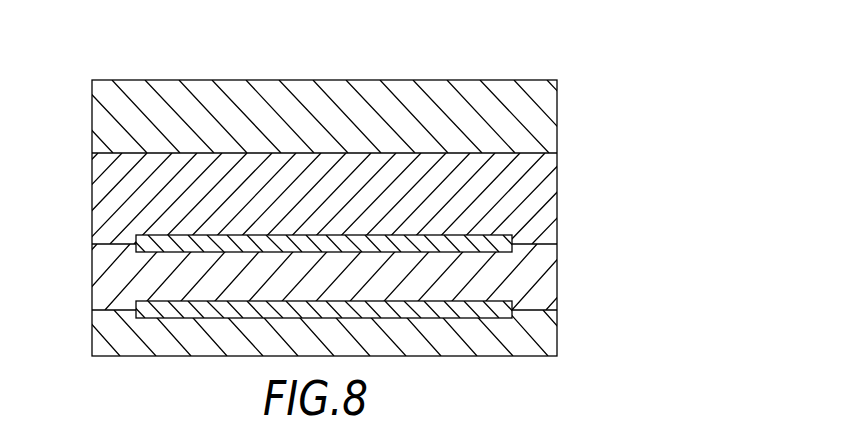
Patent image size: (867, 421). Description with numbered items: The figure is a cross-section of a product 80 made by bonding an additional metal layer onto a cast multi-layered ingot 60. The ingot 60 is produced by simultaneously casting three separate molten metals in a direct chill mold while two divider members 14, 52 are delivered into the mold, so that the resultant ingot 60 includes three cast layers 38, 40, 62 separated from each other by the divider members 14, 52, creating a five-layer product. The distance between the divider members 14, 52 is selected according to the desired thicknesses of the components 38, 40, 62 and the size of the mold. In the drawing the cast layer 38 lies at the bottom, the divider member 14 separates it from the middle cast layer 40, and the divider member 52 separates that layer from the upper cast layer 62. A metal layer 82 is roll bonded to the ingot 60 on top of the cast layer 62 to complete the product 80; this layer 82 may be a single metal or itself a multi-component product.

The product 80 is at (647, 62).
The metal layer 82 is at (557, 110).
The cast layer 62 is at (557, 177).
The ingot 60 is at (68, 155).
The divider member 52 is at (509, 237).
The cast layer 40 is at (557, 275).
The divider member 14 is at (517, 303).
The cast layer 38 is at (557, 333).